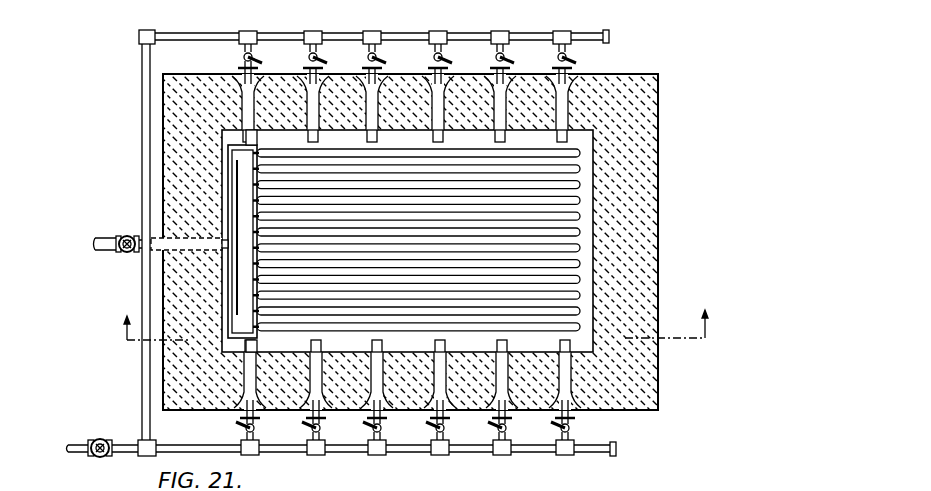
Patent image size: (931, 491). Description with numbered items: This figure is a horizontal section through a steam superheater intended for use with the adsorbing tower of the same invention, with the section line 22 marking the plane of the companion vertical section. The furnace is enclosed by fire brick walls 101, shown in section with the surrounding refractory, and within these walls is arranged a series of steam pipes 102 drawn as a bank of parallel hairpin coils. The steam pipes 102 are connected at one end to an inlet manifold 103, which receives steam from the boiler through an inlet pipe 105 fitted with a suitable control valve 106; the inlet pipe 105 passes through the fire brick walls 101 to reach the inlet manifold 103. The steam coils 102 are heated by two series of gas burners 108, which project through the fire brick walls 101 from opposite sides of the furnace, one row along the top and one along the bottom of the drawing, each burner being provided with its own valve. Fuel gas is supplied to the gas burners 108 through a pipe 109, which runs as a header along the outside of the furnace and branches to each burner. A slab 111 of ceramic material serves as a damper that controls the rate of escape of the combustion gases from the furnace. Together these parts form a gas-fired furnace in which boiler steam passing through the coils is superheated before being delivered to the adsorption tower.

The fire brick walls 101 is at (180, 152).
The steam pipes 102 is at (437, 157).
The inlet manifold 103 is at (238, 286).
The inlet pipe 105 is at (105, 247).
The control valve 106 is at (126, 235).
The gas burners 108 is at (330, 68).
The pipe 109 is at (191, 36).
The slab of ceramic material 111 is at (418, 462).
The section line 22 is at (418, 327).